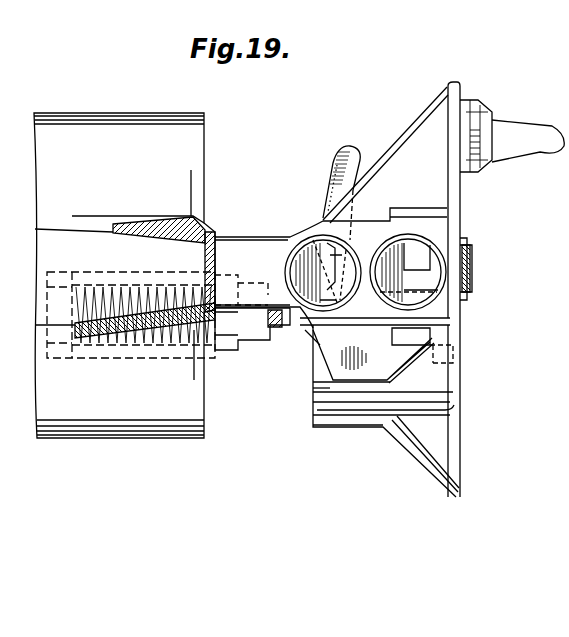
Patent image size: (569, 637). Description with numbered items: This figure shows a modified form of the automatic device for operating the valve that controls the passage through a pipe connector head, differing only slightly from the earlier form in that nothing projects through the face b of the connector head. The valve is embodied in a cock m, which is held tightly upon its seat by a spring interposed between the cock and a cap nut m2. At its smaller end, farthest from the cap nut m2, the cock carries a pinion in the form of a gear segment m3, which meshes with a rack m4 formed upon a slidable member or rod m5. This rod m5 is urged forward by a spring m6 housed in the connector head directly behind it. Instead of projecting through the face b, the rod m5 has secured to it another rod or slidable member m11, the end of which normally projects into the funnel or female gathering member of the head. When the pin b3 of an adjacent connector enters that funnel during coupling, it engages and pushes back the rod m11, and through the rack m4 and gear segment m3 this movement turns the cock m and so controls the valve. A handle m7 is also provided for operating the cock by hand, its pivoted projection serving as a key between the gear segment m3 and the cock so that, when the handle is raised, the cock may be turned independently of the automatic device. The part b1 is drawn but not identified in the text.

The face of the connector head b is at (452, 217).
The block b1 is at (124, 275).
The pin b3 is at (512, 136).
The cock m is at (337, 352).
The cap nut m2 is at (318, 241).
The gear segment m3 is at (372, 242).
The rack m4 is at (322, 338).
The slidable member or rod m5 is at (285, 326).
The spring m6 is at (153, 256).
The handle m7 is at (340, 172).
The rod or slidable member m11 is at (320, 392).